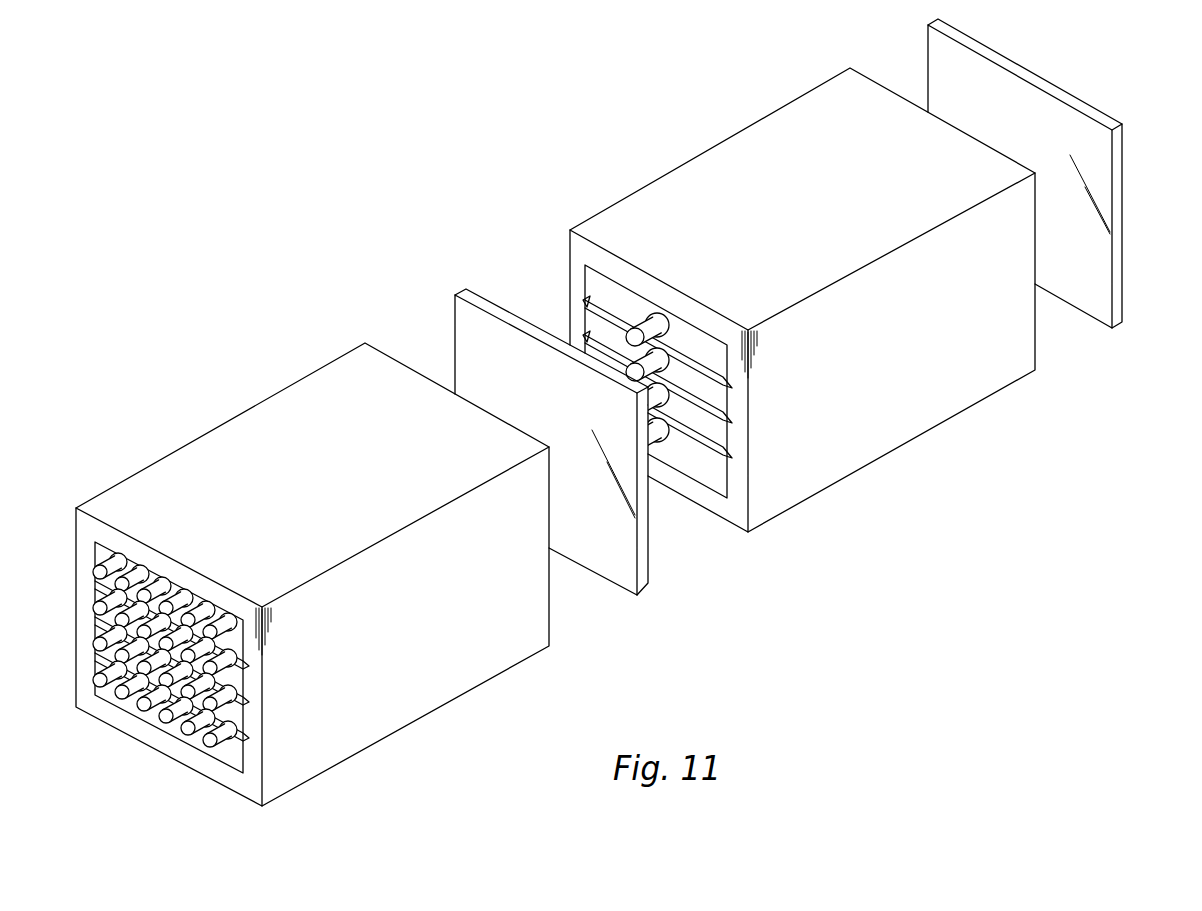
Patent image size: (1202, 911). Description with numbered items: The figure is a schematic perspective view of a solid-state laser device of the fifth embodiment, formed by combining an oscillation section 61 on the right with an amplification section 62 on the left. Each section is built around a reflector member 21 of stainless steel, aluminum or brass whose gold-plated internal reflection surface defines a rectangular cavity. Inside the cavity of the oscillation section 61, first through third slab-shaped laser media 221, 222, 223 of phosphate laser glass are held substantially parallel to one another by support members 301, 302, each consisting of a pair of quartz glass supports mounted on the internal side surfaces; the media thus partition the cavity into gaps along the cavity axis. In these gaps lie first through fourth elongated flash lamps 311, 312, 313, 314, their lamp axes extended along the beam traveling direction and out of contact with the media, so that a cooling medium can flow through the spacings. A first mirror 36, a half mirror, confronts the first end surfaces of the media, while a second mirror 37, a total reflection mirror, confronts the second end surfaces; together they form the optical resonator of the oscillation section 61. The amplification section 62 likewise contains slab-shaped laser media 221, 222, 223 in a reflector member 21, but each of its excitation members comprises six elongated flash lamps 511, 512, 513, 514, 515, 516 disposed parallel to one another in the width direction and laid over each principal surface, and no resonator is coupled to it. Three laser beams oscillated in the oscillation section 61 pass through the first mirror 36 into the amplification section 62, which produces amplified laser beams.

The reflector member 21 is at (945, 410).
The first slab-shaped laser medium 221 is at (718, 372).
The second slab-shaped laser medium 222 is at (712, 412).
The third slab-shaped laser medium 223 is at (712, 448).
The first support member 301 is at (583, 300).
The second support member 302 is at (583, 335).
The first elongated flash lamp 311 is at (663, 321).
The second elongated flash lamp 312 is at (664, 356).
The third elongated flash lamp 313 is at (666, 392).
The fourth elongated flash lamp 314 is at (665, 436).
The first mirror 36 is at (645, 572).
The second mirror 37 is at (1122, 305).
The elongated flash lamp 511 is at (121, 556).
The elongated flash lamp 512 is at (144, 568).
The elongated flash lamp 513 is at (167, 580).
The elongated flash lamp 514 is at (190, 592).
The elongated flash lamp 515 is at (213, 604).
The elongated flash lamp 516 is at (236, 616).
The oscillation section 61 is at (897, 522).
The amplification section 62 is at (581, 693).